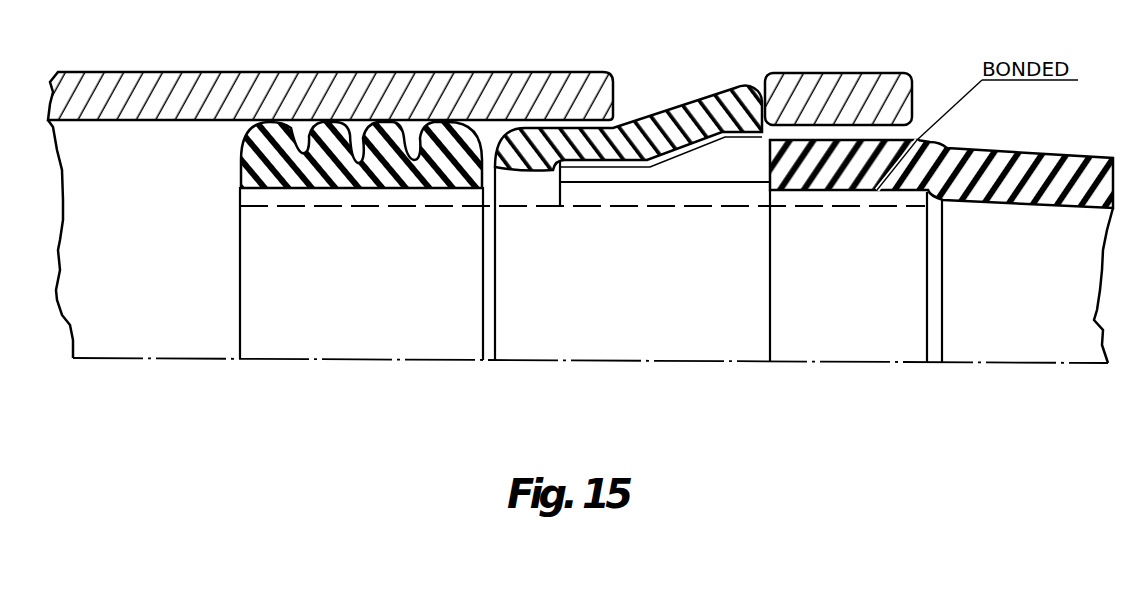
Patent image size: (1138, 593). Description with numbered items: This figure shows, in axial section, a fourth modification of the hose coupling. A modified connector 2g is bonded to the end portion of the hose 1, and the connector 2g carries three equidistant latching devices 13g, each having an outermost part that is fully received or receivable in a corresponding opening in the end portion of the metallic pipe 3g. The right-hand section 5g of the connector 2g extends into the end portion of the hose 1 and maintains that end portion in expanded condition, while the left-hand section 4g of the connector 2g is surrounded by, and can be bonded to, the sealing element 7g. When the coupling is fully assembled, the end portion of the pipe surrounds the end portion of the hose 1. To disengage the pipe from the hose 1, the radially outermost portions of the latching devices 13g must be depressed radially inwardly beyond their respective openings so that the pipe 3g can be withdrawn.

The hose 1 is at (1052, 150).
The connector 2g is at (623, 337).
The metallic pipe 3g is at (237, 92).
The left-hand section 4g is at (358, 338).
The right-hand section 5g is at (853, 350).
The sealing element 7g is at (312, 183).
The latching device 13g is at (740, 84).